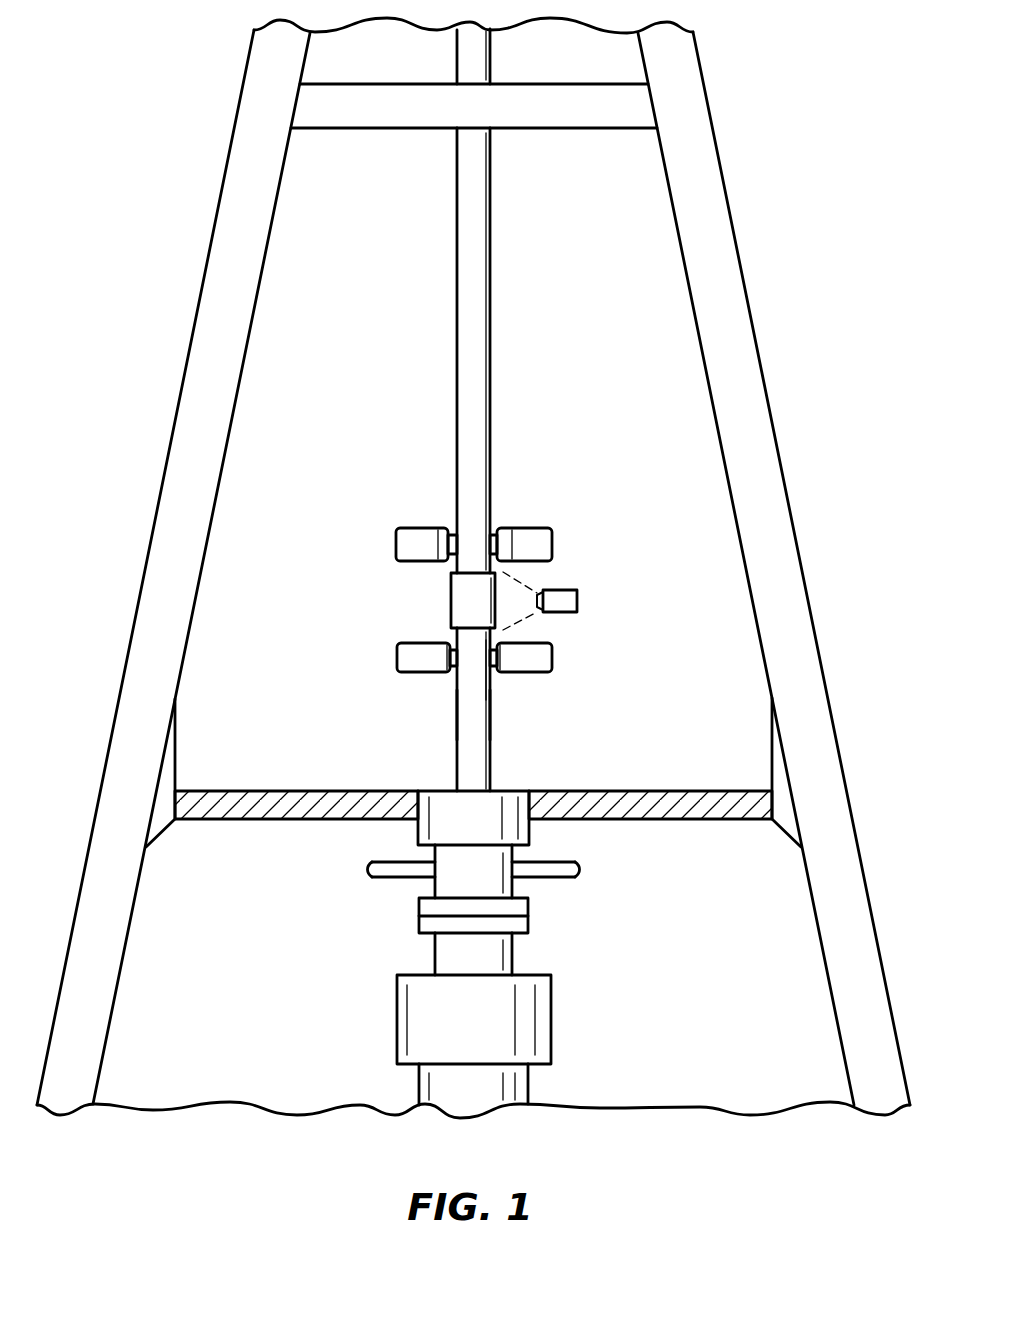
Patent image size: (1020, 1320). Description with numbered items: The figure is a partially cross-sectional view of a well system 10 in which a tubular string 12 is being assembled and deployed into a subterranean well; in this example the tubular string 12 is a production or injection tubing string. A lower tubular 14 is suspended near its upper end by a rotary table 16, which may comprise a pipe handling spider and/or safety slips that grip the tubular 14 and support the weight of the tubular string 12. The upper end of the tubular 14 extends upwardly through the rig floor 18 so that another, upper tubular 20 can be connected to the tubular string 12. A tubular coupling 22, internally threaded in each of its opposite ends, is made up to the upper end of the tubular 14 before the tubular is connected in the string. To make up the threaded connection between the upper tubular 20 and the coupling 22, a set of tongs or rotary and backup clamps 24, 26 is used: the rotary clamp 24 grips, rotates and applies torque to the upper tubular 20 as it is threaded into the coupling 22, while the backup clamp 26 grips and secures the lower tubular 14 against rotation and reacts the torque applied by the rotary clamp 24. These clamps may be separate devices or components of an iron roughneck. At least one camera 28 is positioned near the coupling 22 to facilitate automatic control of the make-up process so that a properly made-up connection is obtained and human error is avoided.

The system 10 is at (621, 541).
The tubular string 12 is at (452, 710).
The tubular 14 is at (491, 699).
The rotary table 16 is at (513, 791).
The rig floor 18 is at (265, 791).
The tubular 20 is at (491, 364).
The tubular coupling 22 is at (450, 590).
The rotary clamp 24 is at (540, 528).
The backup clamp 26 is at (396, 653).
The camera 28 is at (578, 612).